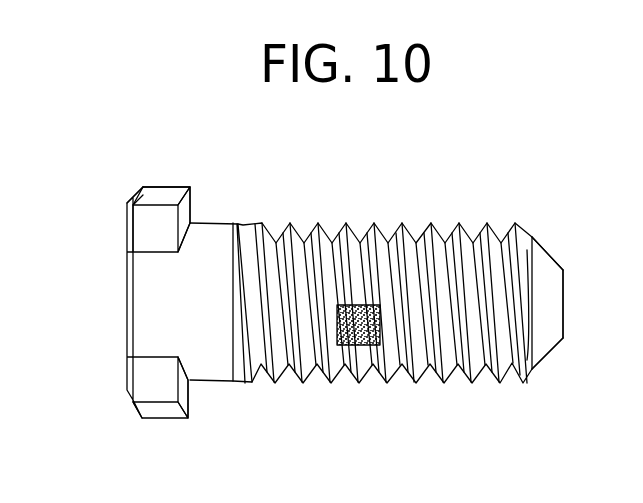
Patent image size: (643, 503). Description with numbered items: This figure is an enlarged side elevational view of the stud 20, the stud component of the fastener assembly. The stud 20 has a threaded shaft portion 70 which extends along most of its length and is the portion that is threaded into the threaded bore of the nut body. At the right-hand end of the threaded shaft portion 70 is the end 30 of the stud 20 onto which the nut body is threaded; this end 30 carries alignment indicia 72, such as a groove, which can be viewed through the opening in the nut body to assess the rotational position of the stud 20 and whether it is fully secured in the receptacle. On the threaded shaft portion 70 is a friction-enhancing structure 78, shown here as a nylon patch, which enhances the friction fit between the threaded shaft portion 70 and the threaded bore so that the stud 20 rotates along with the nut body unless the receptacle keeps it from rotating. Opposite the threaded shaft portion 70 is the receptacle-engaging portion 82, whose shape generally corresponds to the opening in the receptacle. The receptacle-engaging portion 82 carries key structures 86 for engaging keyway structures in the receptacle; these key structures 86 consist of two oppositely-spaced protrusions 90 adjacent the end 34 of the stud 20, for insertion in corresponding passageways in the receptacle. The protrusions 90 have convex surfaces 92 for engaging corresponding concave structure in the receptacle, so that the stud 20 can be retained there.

The stud 20 is at (351, 195).
The end of the stud 30 is at (565, 293).
The end of the stud 34 is at (127, 290).
The threaded shaft portion 70 is at (405, 205).
The alignment indicia 72 is at (565, 320).
The friction-enhancing structure 78 is at (368, 347).
The receptacle-engaging portion 82 is at (152, 168).
The key structures 86 is at (208, 177).
The protrusions 90 is at (152, 222).
The convex surfaces 92 is at (183, 208).